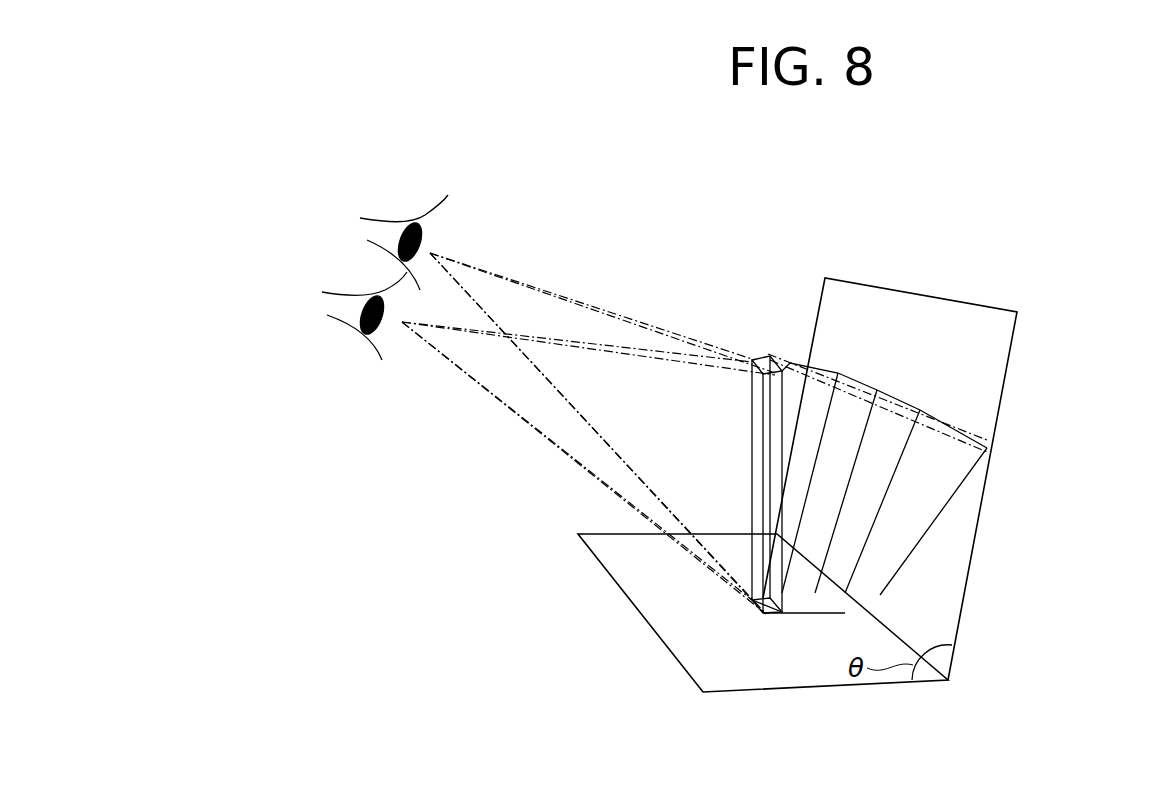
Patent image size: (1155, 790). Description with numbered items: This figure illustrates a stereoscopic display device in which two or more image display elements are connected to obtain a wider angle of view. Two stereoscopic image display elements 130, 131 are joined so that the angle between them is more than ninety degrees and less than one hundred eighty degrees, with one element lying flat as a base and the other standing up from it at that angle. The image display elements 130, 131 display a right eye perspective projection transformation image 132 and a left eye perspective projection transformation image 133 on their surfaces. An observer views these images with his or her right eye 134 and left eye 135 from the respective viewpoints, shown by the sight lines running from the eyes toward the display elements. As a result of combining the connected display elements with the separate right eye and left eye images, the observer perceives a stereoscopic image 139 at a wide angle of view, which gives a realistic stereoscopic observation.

The image display element 130 is at (598, 562).
The image display element 131 is at (1015, 342).
The right eye perspective projection transformation image 132 is at (824, 430).
The left eye perspective projection transformation image 133 is at (957, 496).
The right eye 134 is at (327, 305).
The left eye 135 is at (367, 230).
The stereoscopic image 139 is at (752, 416).